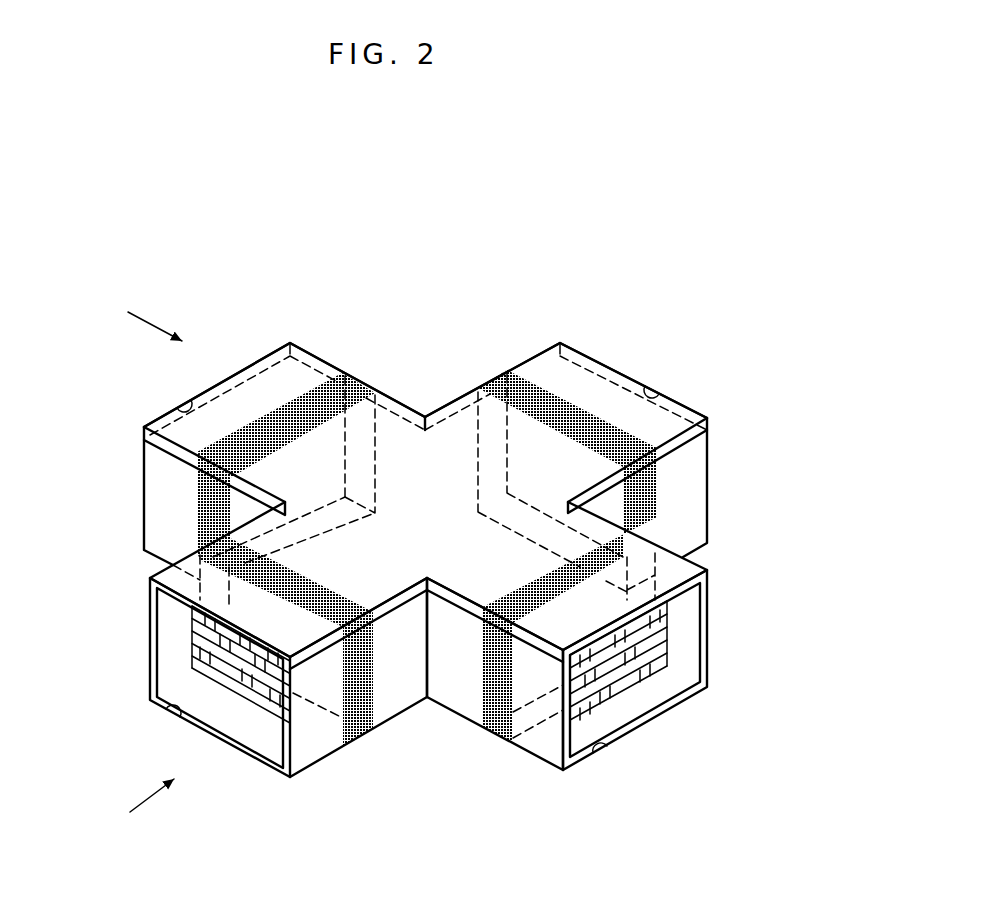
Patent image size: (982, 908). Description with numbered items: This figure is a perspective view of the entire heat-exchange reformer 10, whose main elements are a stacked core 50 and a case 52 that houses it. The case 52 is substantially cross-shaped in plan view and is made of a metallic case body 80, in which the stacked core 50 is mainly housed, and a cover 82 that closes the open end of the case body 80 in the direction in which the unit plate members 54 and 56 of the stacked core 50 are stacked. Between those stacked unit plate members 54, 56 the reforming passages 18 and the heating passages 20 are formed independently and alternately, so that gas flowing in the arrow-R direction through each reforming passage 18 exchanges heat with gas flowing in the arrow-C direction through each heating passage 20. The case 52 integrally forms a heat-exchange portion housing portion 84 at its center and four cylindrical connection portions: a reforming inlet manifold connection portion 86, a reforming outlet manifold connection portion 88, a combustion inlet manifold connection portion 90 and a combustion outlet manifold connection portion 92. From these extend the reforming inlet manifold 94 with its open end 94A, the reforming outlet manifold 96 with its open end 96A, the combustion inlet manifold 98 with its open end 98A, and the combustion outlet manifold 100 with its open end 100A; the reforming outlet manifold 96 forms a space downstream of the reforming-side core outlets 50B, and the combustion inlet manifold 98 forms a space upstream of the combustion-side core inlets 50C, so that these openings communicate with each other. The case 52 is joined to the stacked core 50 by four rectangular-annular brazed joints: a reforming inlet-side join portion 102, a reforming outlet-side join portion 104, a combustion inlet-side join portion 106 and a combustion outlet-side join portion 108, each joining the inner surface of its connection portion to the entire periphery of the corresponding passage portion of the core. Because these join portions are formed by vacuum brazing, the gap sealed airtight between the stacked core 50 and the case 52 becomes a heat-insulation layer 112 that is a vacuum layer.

The heat-exchange reformer 10 is at (572, 247).
The case 52 is at (790, 363).
The cover 82 is at (705, 402).
The case body 80 is at (712, 458).
The reforming inlet manifold 94 is at (300, 356).
The open end of the reforming inlet manifold 94A is at (173, 407).
The combustion outlet manifold 100 is at (613, 402).
The open end of the combustion outlet manifold 100A is at (768, 357).
The heat-exchange portion housing portion 84 is at (418, 492).
The reforming inlet manifold connection portion 86 is at (360, 432).
The combustion outlet-side join portion 108 is at (523, 395).
The reforming inlet-side join portion 102 is at (272, 415).
The combustion outlet manifold connection portion 92 is at (550, 442).
The combustion inlet-side join portion 106 is at (333, 588).
The reforming outlet-side join portion 104 is at (517, 585).
The heat-insulation layer 112 is at (382, 662).
The stacked core 50 is at (75, 597).
The unit plate member 54 is at (187, 623).
The unit plate member 56 is at (188, 640).
The combustion-side core inlets 50C is at (256, 695).
The heating passage 20 is at (244, 842).
The combustion inlet manifold 98 is at (316, 752).
The open end of the combustion inlet manifold 98A is at (170, 704).
The combustion inlet manifold connection portion 90 is at (412, 690).
The reforming-side core outlets 50B is at (810, 749).
The reforming passage 18 is at (618, 660).
The reforming outlet manifold 96 is at (563, 632).
The open end of the reforming outlet manifold 96A is at (598, 742).
The reforming outlet manifold connection portion 88 is at (472, 590).